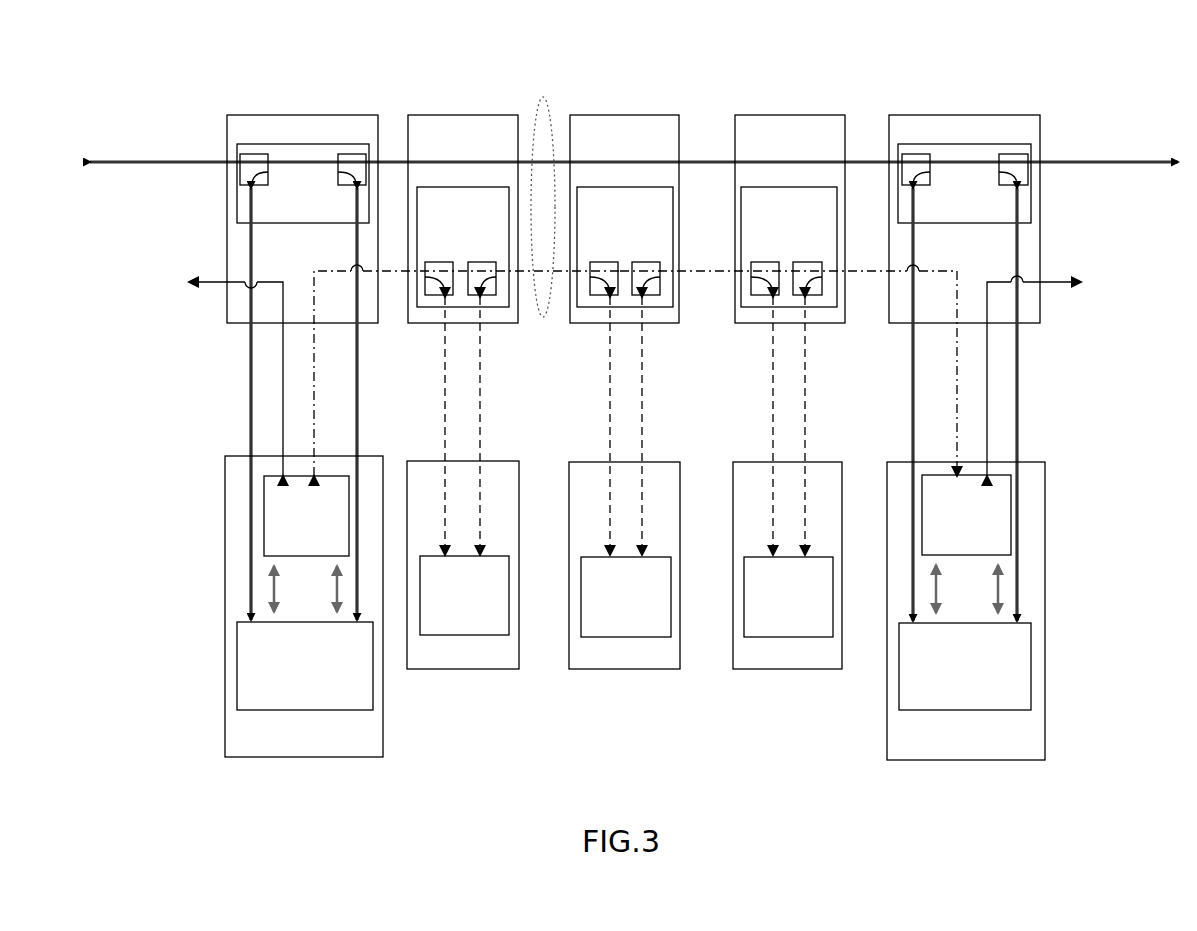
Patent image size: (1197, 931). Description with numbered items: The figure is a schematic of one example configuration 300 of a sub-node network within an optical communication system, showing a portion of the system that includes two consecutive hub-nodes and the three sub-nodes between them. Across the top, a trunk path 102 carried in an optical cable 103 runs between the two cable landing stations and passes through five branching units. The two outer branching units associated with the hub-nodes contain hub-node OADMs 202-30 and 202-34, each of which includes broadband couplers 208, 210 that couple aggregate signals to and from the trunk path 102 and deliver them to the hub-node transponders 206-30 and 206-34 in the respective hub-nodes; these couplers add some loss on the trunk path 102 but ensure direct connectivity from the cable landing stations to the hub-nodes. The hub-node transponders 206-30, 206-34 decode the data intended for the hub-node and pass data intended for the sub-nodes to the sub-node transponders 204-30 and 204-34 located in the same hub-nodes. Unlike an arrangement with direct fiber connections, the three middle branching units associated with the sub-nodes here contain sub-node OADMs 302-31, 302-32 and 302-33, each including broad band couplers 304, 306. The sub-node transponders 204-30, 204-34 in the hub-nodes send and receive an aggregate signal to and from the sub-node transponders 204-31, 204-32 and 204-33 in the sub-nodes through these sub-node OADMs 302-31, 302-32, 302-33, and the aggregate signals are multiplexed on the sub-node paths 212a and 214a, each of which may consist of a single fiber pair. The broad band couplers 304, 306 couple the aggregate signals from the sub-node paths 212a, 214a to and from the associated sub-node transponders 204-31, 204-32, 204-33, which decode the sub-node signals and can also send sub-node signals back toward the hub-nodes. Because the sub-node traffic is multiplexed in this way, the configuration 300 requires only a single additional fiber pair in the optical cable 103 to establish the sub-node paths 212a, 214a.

The OADM configuration of a sub-node network 300 is at (631, 402).
The trunk path 102 is at (634, 117).
The optical cable 103 is at (535, 118).
The broadband coupler 208 is at (563, 347).
The broadband coupler 210 is at (666, 347).
The hub-node OADM 202-30 is at (303, 183).
The hub-node OADM 202-34 is at (964, 183).
The sub-node OADM 302-31 is at (463, 247).
The sub-node OADM 302-32 is at (625, 247).
The sub-node OADM 302-33 is at (789, 247).
The broad band coupler 304 is at (579, 408).
The broad band coupler 306 is at (671, 408).
The sub-node path 212a is at (467, 370).
The sub-node path 214a is at (788, 370).
The sub-node transponder 204-30 is at (306, 516).
The sub-node transponder 204-31 is at (464, 595).
The sub-node transponder 204-32 is at (626, 597).
The sub-node transponder 204-33 is at (788, 597).
The sub-node transponder 204-34 is at (966, 515).
The hub-node transponder 206-30 is at (305, 666).
The hub-node transponder 206-34 is at (965, 666).